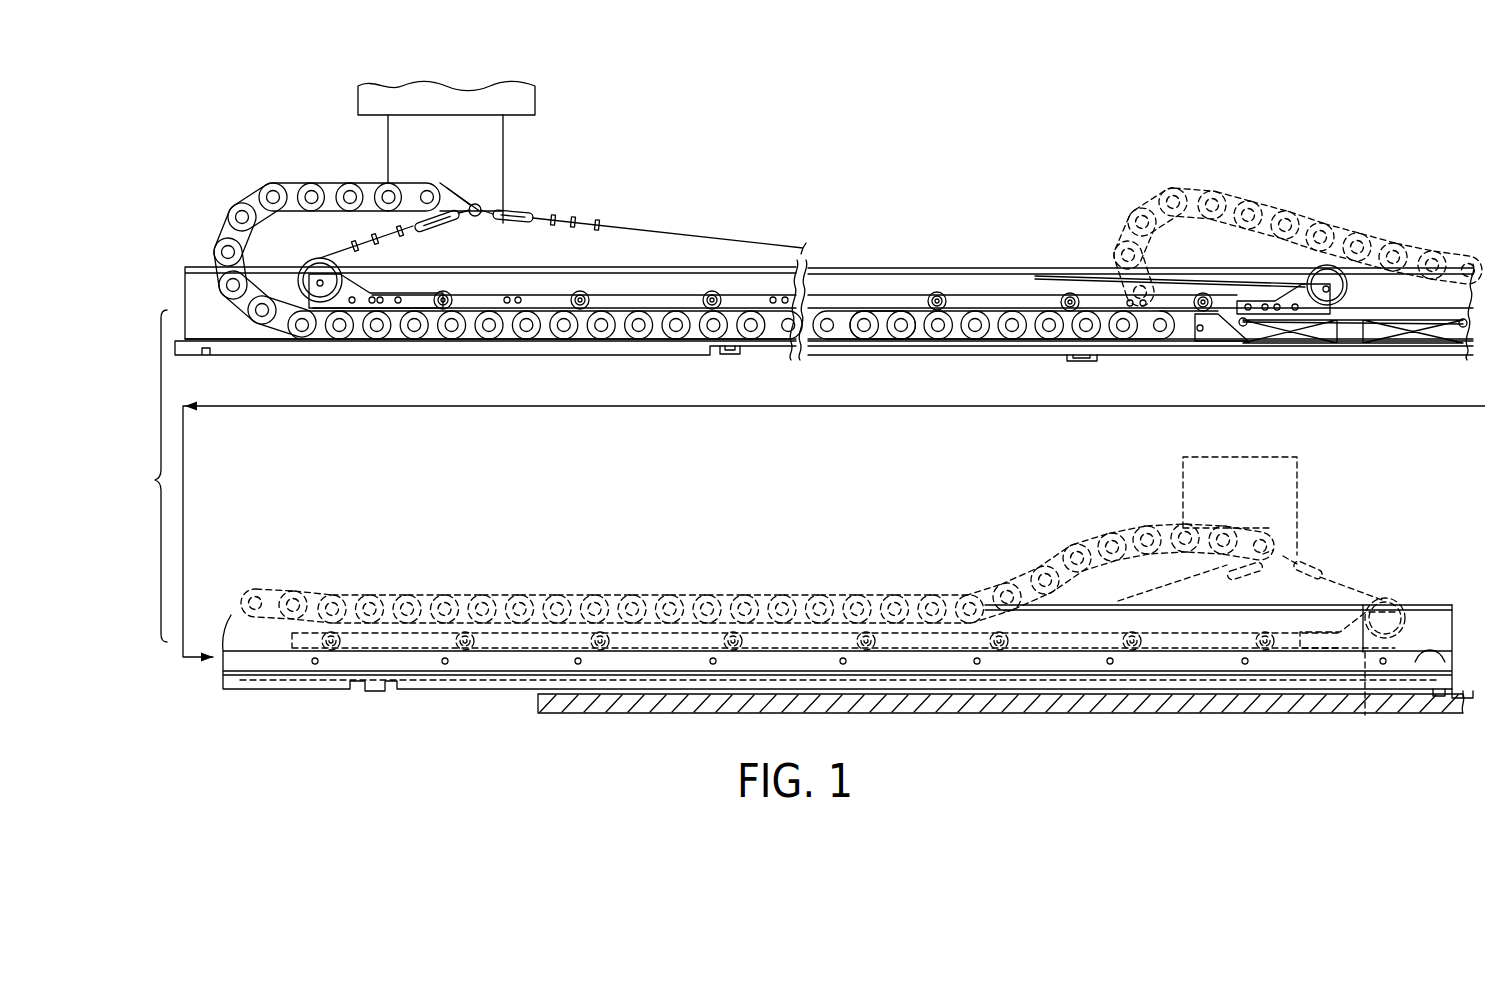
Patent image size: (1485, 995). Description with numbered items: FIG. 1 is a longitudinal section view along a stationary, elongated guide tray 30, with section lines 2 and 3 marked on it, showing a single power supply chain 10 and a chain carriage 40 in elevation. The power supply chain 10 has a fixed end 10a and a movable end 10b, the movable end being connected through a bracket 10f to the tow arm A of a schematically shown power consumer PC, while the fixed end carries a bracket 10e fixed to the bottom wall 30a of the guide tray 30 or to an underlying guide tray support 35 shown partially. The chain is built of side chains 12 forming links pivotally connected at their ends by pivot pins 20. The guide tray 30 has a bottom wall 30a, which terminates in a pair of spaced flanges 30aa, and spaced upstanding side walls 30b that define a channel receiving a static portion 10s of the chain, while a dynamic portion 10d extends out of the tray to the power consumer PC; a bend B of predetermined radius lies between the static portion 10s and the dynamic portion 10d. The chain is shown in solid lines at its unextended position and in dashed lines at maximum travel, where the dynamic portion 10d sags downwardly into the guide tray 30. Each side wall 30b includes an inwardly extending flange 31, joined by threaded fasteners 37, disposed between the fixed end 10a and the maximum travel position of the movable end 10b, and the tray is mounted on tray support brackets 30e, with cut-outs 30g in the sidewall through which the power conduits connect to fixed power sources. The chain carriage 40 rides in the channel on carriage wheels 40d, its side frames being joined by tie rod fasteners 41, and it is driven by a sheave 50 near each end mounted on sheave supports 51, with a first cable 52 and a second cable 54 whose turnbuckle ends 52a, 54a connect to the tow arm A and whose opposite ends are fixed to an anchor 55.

The power consumer PC is at (528, 94).
The tow arm A is at (487, 128).
The bend B is at (219, 218).
The section line 2 is at (1058, 378).
The section line 3 is at (345, 715).
The power supply chain 10 is at (840, 367).
The fixed end 10a is at (1229, 303).
The movable end 10b is at (461, 184).
The dynamic portion 10d is at (1412, 252).
The bracket 10e is at (1215, 340).
The bracket 10f is at (470, 192).
The static portion 10s is at (880, 334).
The side chain 12 is at (612, 332).
The pivot pins 20 is at (454, 332).
The guide tray 30 is at (824, 466).
The bottom wall 30a is at (290, 337).
The side walls 30b is at (220, 340).
The tray support brackets 30e is at (728, 357).
The spaced flanges 30aa is at (940, 354).
The cut-outs 30g is at (1410, 346).
The flange 31 is at (1420, 653).
The guide tray support 35 is at (600, 695).
The threaded fasteners 37 is at (445, 664).
The chain carriage 40 is at (882, 482).
The carriage wheels 40d is at (937, 295).
The tie rod fasteners 41 is at (512, 306).
The sheave 50 is at (312, 259).
The sheave supports 51 is at (1296, 288).
The first cable 52 is at (852, 368).
The turnbuckle end 52a is at (435, 222).
The second cable 54 is at (939, 378).
The turnbuckle end 54a is at (524, 223).
The anchor 55 is at (1465, 323).